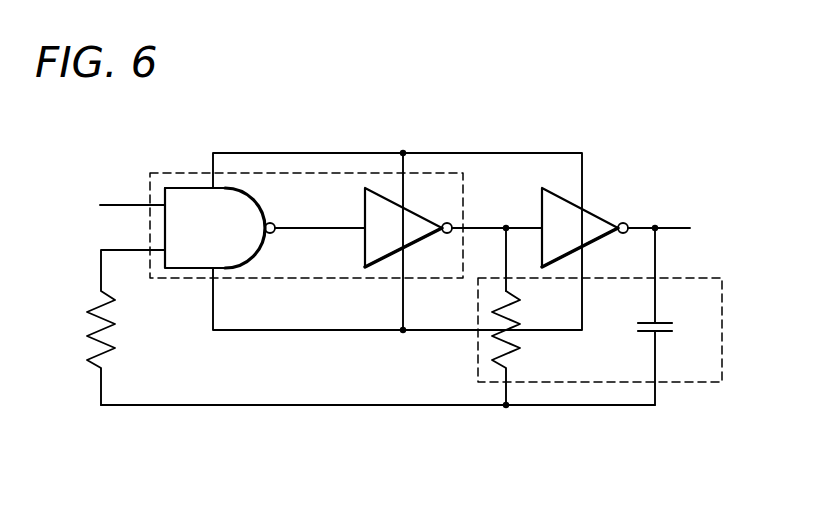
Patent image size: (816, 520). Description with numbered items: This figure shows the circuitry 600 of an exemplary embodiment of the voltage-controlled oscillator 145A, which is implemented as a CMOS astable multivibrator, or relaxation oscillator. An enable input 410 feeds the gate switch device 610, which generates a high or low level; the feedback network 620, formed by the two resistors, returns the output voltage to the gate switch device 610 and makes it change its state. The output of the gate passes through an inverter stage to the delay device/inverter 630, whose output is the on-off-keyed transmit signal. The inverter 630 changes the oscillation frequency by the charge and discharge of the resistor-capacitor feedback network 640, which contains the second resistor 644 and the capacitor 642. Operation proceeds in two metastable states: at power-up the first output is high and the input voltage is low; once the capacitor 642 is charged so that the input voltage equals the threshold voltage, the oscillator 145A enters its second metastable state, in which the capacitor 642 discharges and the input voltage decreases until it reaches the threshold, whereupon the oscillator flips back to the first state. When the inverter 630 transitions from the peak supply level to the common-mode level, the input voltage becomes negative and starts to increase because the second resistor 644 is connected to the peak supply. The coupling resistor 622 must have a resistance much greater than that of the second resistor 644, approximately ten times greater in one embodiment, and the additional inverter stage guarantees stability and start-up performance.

The circuitry 600 is at (637, 96).
The voltage-controlled oscillator 145A is at (239, 117).
The enable input 410 is at (117, 205).
The AND gate switch device 610 is at (223, 240).
The delay device/inverter 630 is at (584, 208).
The coupling resistor R1 622 is at (110, 347).
The R2/R1 feedback network 620 is at (280, 405).
The R2C1 feedback network 640 is at (622, 382).
The resistor R2 644 is at (512, 350).
The capacitor C1 642 is at (656, 333).